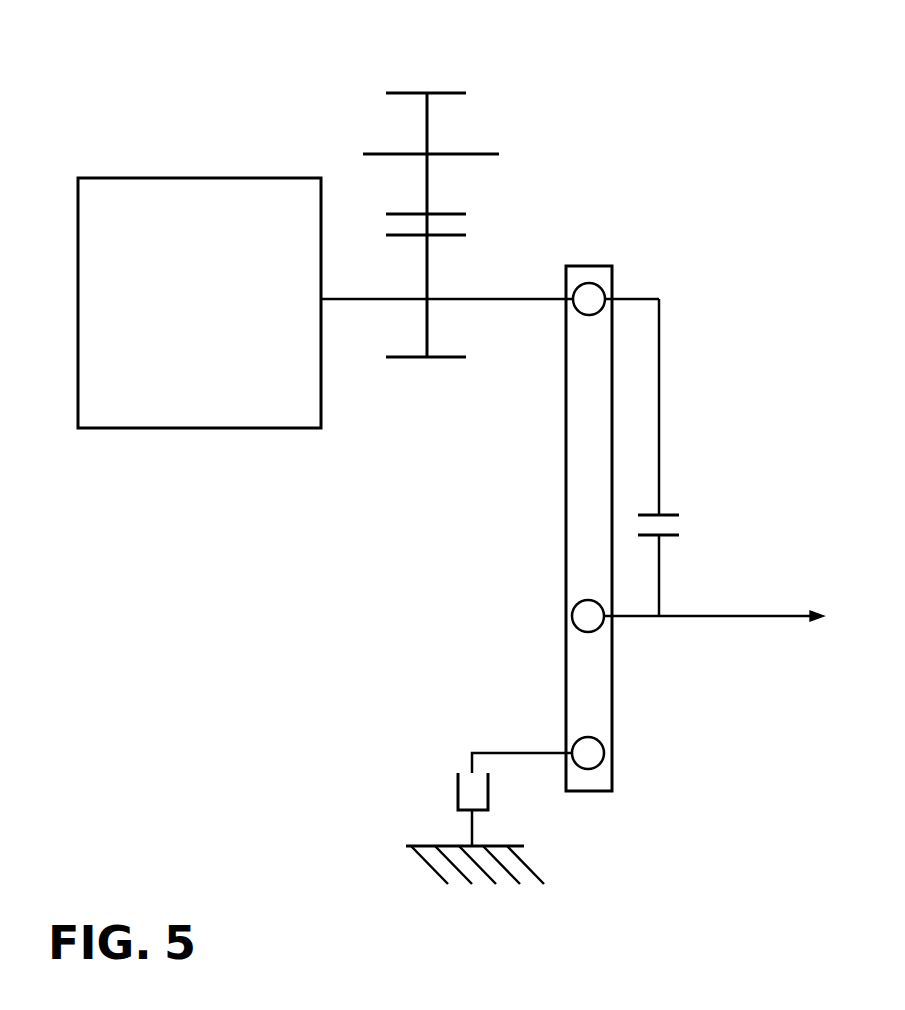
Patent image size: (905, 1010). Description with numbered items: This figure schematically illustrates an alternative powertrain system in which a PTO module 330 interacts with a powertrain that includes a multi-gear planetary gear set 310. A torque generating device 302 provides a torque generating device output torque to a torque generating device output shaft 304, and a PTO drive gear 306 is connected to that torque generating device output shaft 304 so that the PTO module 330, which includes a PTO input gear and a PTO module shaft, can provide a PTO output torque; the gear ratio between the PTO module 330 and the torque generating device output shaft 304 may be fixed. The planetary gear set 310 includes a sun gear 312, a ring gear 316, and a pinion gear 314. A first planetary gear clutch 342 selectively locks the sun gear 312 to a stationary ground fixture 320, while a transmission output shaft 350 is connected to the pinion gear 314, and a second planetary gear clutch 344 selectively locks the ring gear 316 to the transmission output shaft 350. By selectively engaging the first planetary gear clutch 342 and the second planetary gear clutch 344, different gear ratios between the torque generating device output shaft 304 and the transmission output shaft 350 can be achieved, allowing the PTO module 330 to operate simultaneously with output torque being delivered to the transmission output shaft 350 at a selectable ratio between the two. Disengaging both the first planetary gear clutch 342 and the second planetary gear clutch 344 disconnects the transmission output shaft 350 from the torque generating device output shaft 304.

The torque generating device 302 is at (143, 177).
The torque generating device output shaft 304 is at (509, 298).
The PTO drive gear 306 is at (440, 360).
The multi-gear planetary gear set 310 is at (563, 475).
The sun gear 312 is at (605, 760).
The pinion gear 314 is at (563, 622).
The ring gear 316 is at (590, 282).
The stationary ground fixture 320 is at (418, 843).
The PTO module 330 is at (447, 92).
The first planetary gear clutch 342 is at (455, 790).
The second planetary gear clutch 344 is at (666, 512).
The transmission output shaft 350 is at (735, 617).